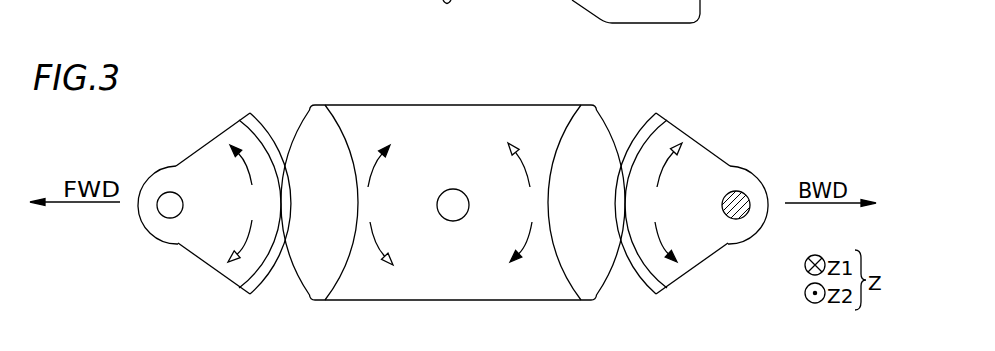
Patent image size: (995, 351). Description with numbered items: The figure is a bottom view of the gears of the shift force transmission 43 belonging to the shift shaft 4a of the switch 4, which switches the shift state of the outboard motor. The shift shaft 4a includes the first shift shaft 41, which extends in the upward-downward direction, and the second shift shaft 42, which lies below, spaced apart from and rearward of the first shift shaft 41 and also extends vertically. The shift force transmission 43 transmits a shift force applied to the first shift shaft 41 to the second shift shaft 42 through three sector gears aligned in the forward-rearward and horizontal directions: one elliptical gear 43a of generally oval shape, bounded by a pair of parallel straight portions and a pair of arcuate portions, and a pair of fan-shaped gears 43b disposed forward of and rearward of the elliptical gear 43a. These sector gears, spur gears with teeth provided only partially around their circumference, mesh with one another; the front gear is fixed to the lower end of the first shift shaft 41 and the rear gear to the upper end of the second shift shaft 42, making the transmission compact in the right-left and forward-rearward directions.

The switch 4 is at (762, 85).
The shift shaft 4a is at (748, 107).
The first shift shaft 41 is at (170, 218).
The second shift shaft 42 is at (745, 219).
The shift force transmission 43 is at (726, 139).
The elliptical gear 43a is at (486, 120).
The fan-shaped gear 43b is at (247, 122).